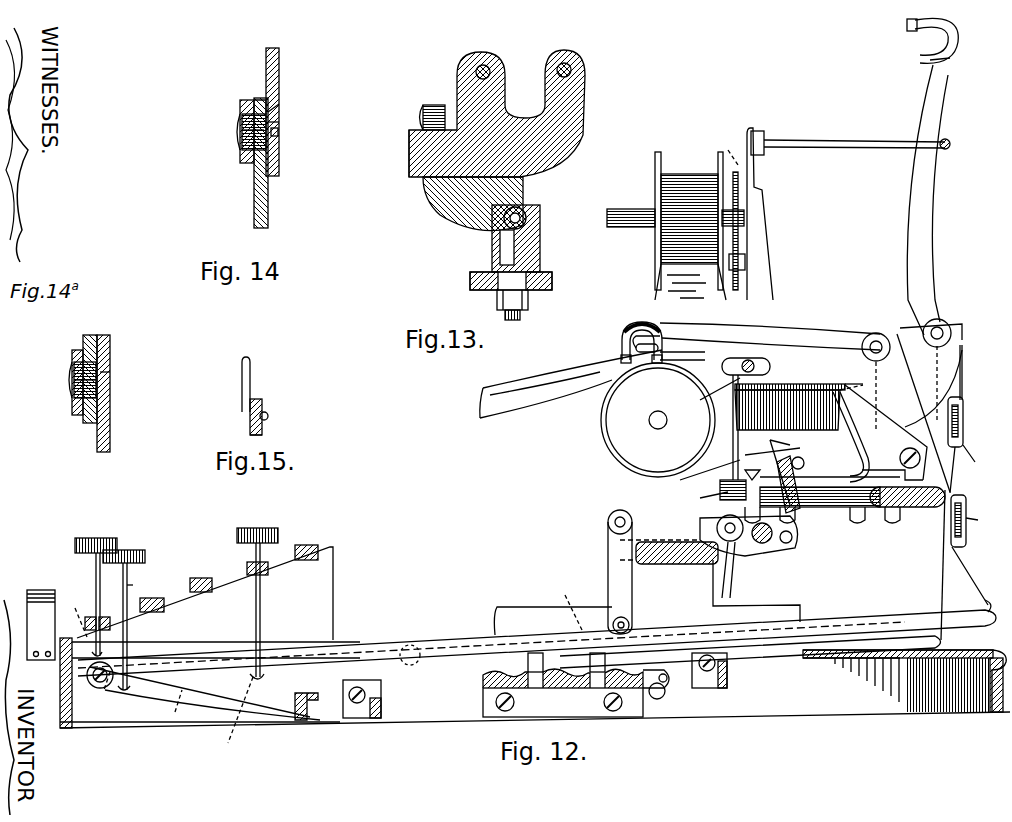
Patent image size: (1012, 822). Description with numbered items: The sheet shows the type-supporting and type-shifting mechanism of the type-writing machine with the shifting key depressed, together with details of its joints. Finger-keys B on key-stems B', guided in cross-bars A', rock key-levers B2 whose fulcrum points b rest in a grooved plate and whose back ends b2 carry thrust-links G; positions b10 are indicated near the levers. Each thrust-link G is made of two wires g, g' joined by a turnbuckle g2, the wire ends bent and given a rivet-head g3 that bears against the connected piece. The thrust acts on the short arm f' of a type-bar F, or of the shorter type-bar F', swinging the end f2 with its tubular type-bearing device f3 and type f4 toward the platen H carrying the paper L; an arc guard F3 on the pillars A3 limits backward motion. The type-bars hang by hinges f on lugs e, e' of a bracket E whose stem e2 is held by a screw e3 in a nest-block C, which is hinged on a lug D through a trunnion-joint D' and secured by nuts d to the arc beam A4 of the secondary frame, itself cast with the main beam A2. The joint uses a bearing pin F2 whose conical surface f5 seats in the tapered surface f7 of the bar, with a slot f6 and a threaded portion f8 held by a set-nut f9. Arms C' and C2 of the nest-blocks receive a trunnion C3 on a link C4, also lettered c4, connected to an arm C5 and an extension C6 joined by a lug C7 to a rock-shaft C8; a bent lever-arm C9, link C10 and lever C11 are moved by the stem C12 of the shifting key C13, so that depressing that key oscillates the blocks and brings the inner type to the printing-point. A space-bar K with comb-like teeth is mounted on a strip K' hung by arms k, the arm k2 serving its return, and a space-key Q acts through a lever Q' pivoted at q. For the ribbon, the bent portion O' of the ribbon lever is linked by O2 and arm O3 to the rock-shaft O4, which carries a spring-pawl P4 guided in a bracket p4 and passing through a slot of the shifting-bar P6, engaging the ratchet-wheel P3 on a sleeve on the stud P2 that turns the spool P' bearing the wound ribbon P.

In FIG. 14, the type-bar F is at (279, 112).
In FIG. 12, the type-bar F is at (932, 329).
In FIG. 14, the lug e is at (266, 163).
In FIG. 13, the lug e is at (578, 77).
In FIG. 12, the lug e is at (937, 343).
In FIG. 14, the set-nut f9 is at (241, 118).
In FIG. 14a, the set-nut f9 is at (72, 358).
In FIG. 14, the conical bearing-surface f7 is at (262, 104).
In FIG. 14, the threaded portion f8 is at (240, 134).
In FIG. 14a, the threaded portion f8 is at (74, 383).
In FIG. 14, the tapered bearing-surface f5 is at (280, 110).
In FIG. 12, the tapered bearing-surface f5 is at (652, 360).
In FIG. 14, the bearing pin F2 is at (280, 122).
In FIG. 14a, the bearing pin F2 is at (110, 372).
In FIG. 14, the screw-driver slot f6 is at (279, 134).
In FIG. 14a, the lug e' is at (115, 393).
In FIG. 13, the lug e' is at (499, 79).
In FIG. 14a, the short type-bar F' is at (98, 366).
In FIG. 12, the short type-bar F' is at (775, 370).
In FIG. 15, the shorter wire g' is at (261, 384).
In FIG. 12, the shorter wire g' is at (976, 475).
In FIG. 15, the longer wire g is at (239, 420).
In FIG. 12, the longer wire g is at (923, 413).
In FIG. 15, the rivet-head g3 is at (268, 416).
In FIG. 15, the back end of key-lever b2 is at (262, 434).
In FIG. 13, the bracket E is at (575, 150).
In FIG. 12, the bracket E is at (901, 413).
In FIG. 13, the small screw e3 is at (433, 107).
In FIG. 13, the stem e2 is at (401, 153).
In FIG. 13, the nest-block C is at (473, 214).
In FIG. 12, the nest-block C is at (829, 432).
In FIG. 13, the lug D is at (495, 241).
In FIG. 13, the trunnion-joint D' is at (539, 208).
In FIG. 13, the arc beam A4 is at (470, 286).
In FIG. 12, the arc beam A4 is at (950, 500).
In FIG. 13, the nut d is at (530, 299).
In FIG. 12, the nut d is at (910, 518).
In FIG. 12, the type f4 is at (903, 25).
In FIG. 12, the type-bearing device f3 is at (650, 318).
In FIG. 12, the end of type-bar f2 is at (950, 60).
In FIG. 12, the hinge f is at (796, 333).
In FIG. 12, the arc guard F3 is at (850, 136).
In FIG. 12, the stud P2 is at (675, 208).
In FIG. 12, the spool P' is at (689, 220).
In FIG. 12, the pulley P is at (690, 240).
In FIG. 12, the bracket p4 is at (745, 262).
In FIG. 12, the spring-pawl P4 is at (742, 287).
In FIG. 12, the ratchet-wheel P3 is at (726, 147).
In FIG. 12, the upright pillar A3 is at (768, 214).
In FIG. 12, the rock-shaft O4 is at (746, 357).
In FIG. 12, the platen H is at (658, 420).
In FIG. 12, the paper L is at (571, 384).
In FIG. 12, the short arm f' is at (946, 334).
In FIG. 12, the arm C' is at (795, 437).
In FIG. 12, the arm C2 is at (745, 455).
In FIG. 12, the trunnion C3 is at (802, 456).
In FIG. 12, the link c4 is at (759, 484).
In FIG. 12, the thrust-link G is at (986, 548).
In FIG. 12, the turnbuckle g2 is at (978, 486).
In FIG. 12, the fulcrum point b is at (996, 604).
In FIG. 12, the arm O3 is at (710, 394).
In FIG. 12, the link O2 is at (700, 476).
In FIG. 12, the bent portion O' is at (723, 488).
In FIG. 12, the shifting-bar P6 is at (707, 503).
In FIG. 12, the link C10 is at (620, 585).
In FIG. 12, the lever C11 is at (371, 651).
In FIG. 12, the main beam A2 is at (664, 540).
In FIG. 12, the arm C5 is at (785, 545).
In FIG. 12, the lug C7 is at (762, 545).
In FIG. 12, the extension C6 is at (784, 545).
In FIG. 12, the link C4 is at (790, 525).
In FIG. 12, the rock-shaft C8 is at (727, 578).
In FIG. 12, the bent lever-arm C9 is at (688, 572).
In FIG. 12, the key-lever B2 is at (396, 652).
In FIG. 12, the space-key lever Q' is at (394, 638).
In FIG. 12, the pivot q is at (662, 696).
In FIG. 12, the space-key Q is at (41, 614).
In FIG. 12, the space-bar K is at (216, 697).
In FIG. 12, the arm k is at (205, 693).
In FIG. 12, the arm k2 is at (95, 686).
In FIG. 12, the pivot line b10 is at (176, 713).
In FIG. 12, the strip K' is at (304, 723).
In FIG. 12, the key-stem B' is at (205, 586).
In FIG. 12, the cross-bar A' is at (247, 564).
In FIG. 12, the finger-key B is at (176, 594).
In FIG. 12, the shifting-key C13 is at (127, 611).
In FIG. 12, the stem C12 is at (128, 586).